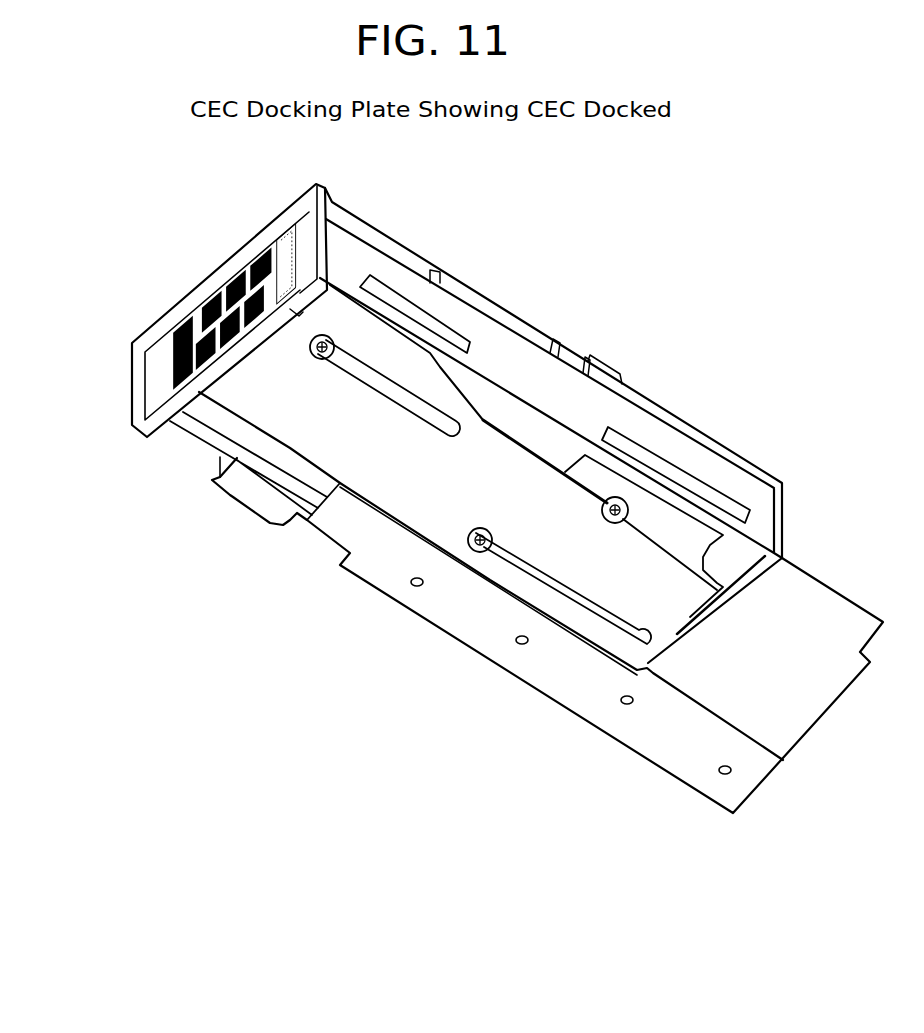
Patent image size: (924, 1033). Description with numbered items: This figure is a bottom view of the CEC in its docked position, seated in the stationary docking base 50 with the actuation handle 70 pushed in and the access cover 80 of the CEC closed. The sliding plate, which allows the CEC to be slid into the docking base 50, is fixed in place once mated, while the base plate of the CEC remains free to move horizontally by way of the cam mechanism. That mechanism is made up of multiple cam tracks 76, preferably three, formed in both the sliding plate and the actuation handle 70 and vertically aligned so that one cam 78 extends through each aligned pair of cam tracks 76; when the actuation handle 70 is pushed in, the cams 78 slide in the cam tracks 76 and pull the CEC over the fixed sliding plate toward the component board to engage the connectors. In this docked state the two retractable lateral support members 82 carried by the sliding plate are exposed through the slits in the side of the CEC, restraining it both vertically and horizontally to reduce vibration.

The docking base 50 is at (421, 624).
The actuation handle 70 is at (242, 392).
The cam tracks 76 is at (413, 403).
The cams 78 is at (632, 498).
The access cover 80 is at (200, 287).
The retractable lateral support members 82 is at (390, 290).